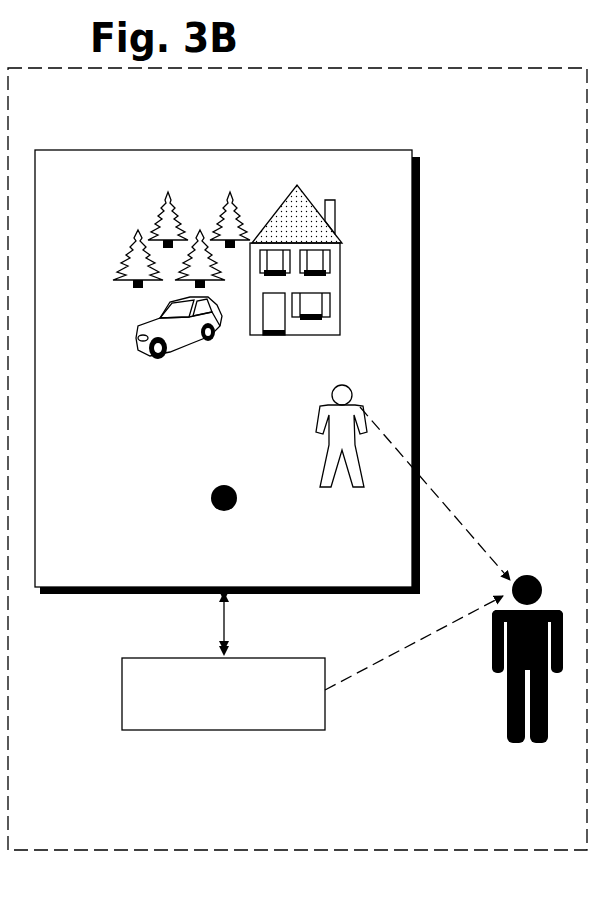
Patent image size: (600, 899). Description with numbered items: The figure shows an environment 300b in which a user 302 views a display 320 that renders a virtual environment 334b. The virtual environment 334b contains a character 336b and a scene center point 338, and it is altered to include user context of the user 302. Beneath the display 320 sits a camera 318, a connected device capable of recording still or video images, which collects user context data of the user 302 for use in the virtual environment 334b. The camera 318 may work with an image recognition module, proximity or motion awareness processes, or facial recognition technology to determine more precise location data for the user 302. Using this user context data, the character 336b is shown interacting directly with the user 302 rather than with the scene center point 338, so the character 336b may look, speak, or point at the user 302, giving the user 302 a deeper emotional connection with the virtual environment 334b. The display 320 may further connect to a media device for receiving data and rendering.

The environment 300b is at (452, 190).
The display 320 is at (218, 150).
The virtual environment 334b is at (222, 259).
The character 336b is at (342, 385).
The scene center point 338 is at (224, 511).
The camera 318 is at (223, 694).
The user 302 is at (527, 750).